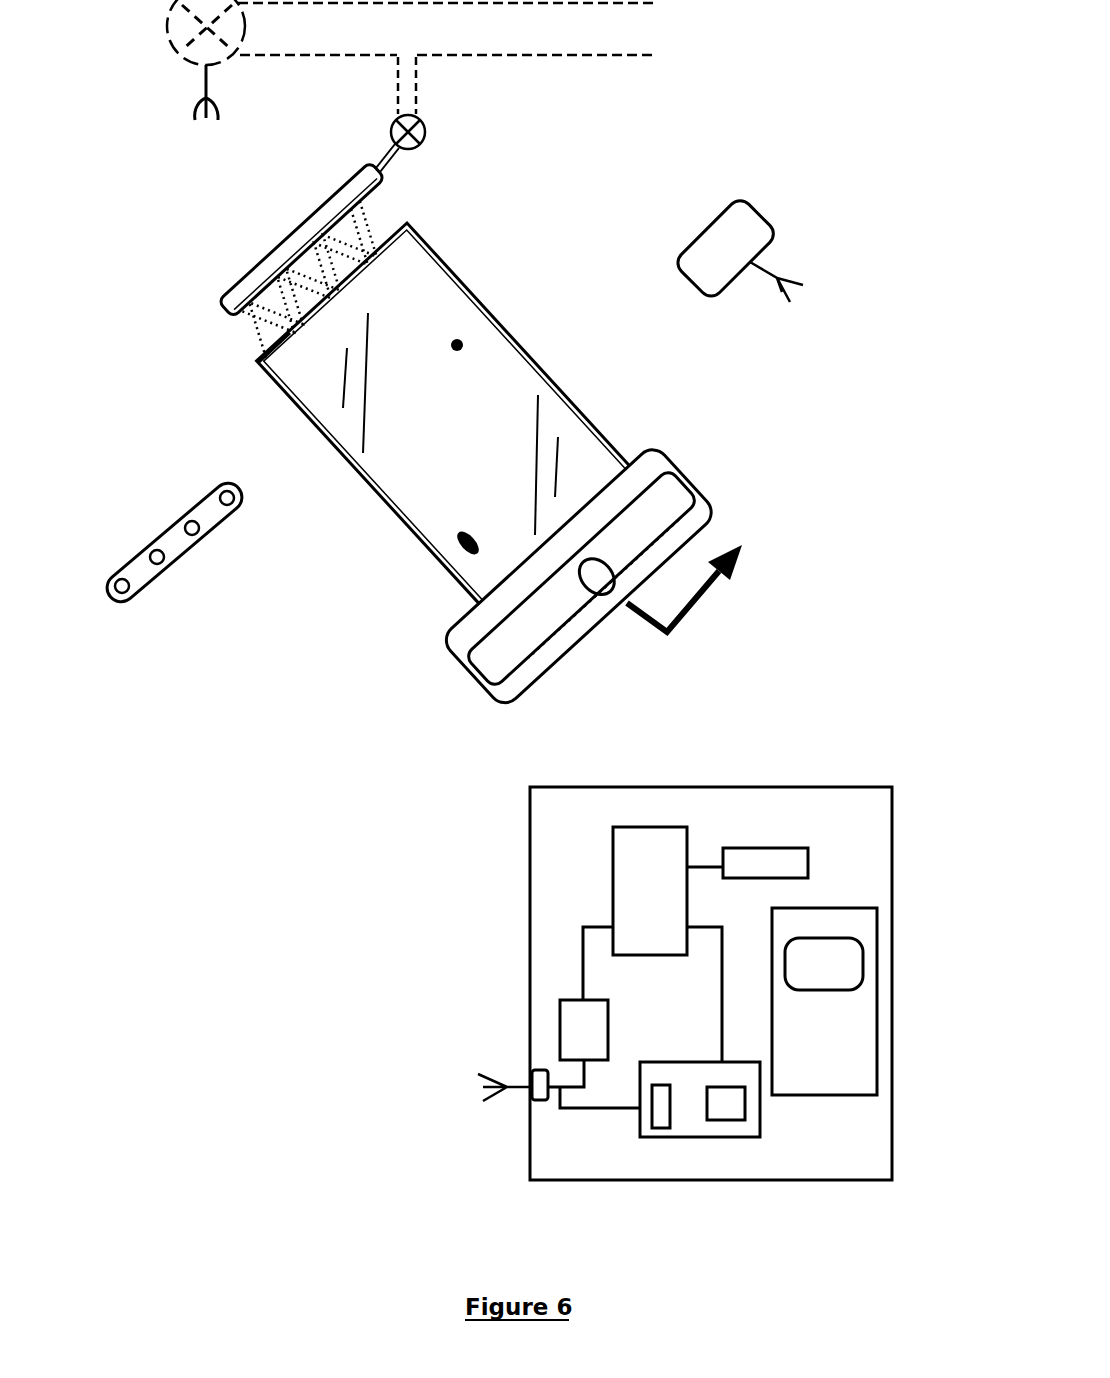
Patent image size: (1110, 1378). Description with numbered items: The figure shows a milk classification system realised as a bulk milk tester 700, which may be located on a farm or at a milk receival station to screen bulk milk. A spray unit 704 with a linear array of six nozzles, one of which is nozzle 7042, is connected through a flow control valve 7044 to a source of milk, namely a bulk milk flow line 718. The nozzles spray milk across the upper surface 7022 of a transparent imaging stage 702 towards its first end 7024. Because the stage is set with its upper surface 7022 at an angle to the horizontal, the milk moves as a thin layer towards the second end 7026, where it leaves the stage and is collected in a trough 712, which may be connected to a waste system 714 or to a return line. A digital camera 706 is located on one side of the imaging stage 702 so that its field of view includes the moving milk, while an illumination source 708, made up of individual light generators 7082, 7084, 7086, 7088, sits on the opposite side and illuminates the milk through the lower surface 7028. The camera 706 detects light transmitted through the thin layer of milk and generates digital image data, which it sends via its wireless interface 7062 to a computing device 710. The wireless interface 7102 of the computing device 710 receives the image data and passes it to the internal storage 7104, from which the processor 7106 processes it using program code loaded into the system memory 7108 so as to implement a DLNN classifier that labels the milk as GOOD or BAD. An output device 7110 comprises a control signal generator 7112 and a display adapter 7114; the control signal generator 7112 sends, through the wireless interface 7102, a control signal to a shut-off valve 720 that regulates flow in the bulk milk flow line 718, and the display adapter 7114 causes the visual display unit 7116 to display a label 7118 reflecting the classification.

The bulk milk tester 700 is at (180, 965).
The transparent imaging stage 702 is at (590, 408).
The upper surface 7022 is at (463, 350).
The first end 7024 is at (260, 368).
The second end 7026 is at (582, 592).
The lower surface 7028 is at (430, 553).
The spray unit 704 is at (280, 247).
The nozzle 7042 is at (370, 197).
The flow control valve 7044 is at (426, 128).
The digital camera 706 is at (773, 217).
The wireless interface 7062 is at (790, 278).
The illumination source 708 is at (140, 534).
The individual light generator 7082 is at (131, 594).
The individual light generator 7084 is at (165, 562).
The individual light generator 7086 is at (200, 535).
The individual light generator 7088 is at (230, 505).
The computing device 710 is at (848, 1180).
The wireless interface 7102 is at (483, 1100).
The internal storage 7104 is at (560, 1025).
The processor 7106 is at (648, 828).
The system memory 7108 is at (763, 848).
The output device 7110 is at (703, 1137).
The control signal generator 7112 is at (653, 1128).
The display adapter 7114 is at (730, 1120).
The visual display unit 7116 is at (826, 907).
The label 7118 is at (837, 990).
The trough 712 is at (705, 492).
The waste system 714 is at (702, 576).
The bulk milk flow line 718 is at (470, 37).
The shut-off valve 720 is at (170, 50).